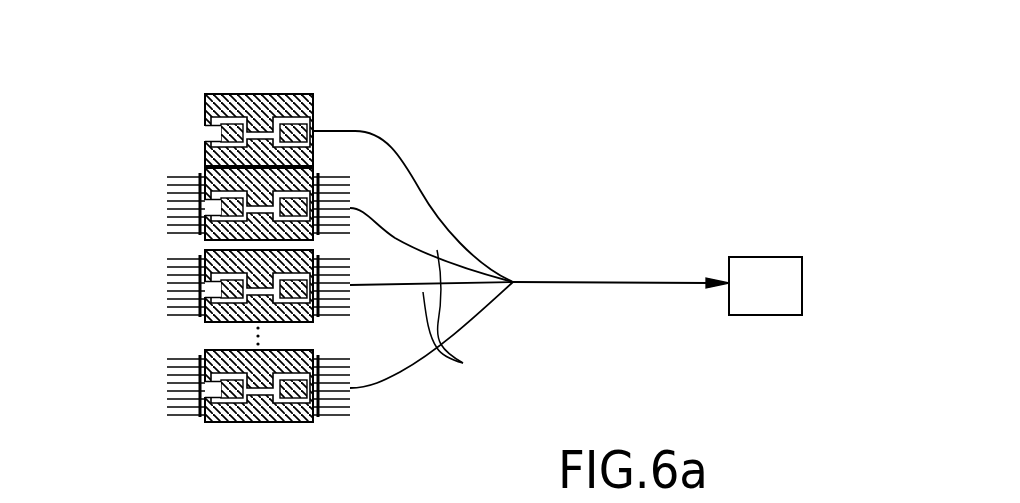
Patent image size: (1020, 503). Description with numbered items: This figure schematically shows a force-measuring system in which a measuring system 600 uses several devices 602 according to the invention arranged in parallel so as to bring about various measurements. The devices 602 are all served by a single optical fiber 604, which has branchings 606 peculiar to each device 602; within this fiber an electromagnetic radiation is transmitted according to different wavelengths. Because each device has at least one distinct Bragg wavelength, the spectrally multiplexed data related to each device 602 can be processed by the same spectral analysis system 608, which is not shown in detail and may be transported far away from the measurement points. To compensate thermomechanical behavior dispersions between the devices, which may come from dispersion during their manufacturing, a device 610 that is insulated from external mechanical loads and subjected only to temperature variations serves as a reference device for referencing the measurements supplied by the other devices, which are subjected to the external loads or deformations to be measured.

The measuring system 600 is at (468, 143).
The devices 602 is at (168, 384).
The single optical fiber 604 is at (652, 284).
The branchings 606 is at (410, 369).
The spectral analysis system 608 is at (785, 296).
The reference device 610 is at (205, 120).